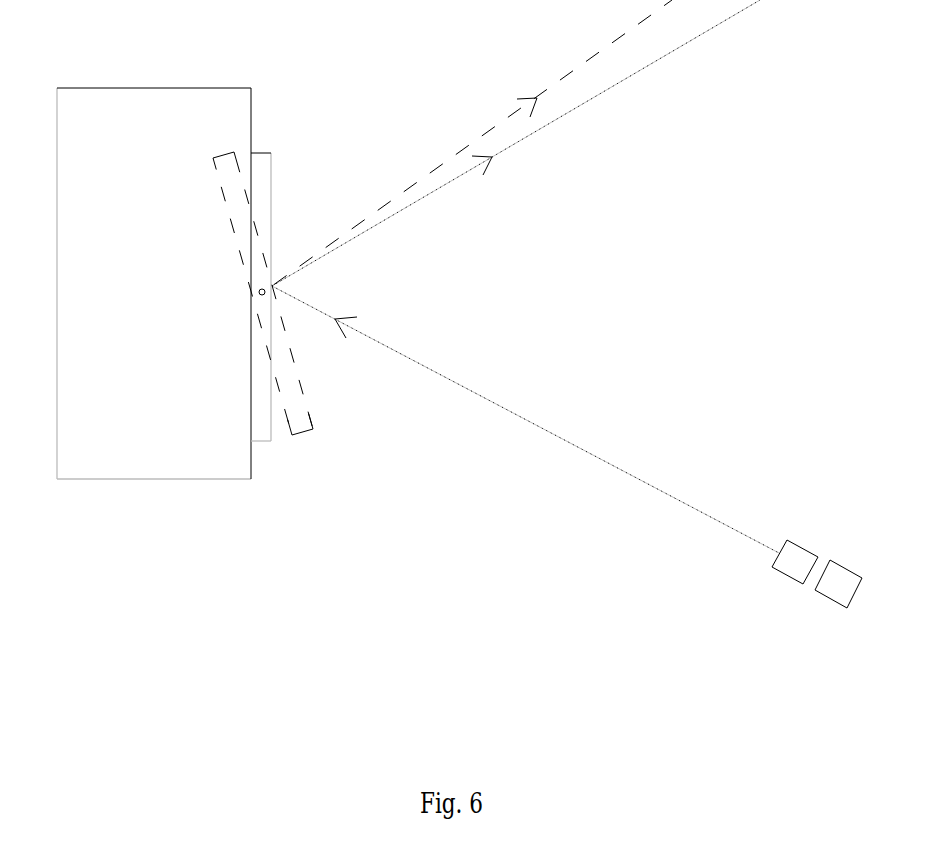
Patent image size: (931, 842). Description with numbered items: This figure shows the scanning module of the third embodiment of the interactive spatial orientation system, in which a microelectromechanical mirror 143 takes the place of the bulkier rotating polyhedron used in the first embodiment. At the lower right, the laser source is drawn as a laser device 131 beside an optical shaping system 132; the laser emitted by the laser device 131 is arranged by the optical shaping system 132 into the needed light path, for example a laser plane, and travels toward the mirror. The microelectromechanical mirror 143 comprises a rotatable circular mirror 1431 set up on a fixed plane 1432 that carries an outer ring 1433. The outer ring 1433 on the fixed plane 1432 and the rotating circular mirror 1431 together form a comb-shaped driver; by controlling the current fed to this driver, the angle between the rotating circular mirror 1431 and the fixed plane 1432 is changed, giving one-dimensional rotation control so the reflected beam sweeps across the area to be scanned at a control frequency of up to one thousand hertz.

The microelectromechanical mirror 143 is at (87, 432).
The rotatable circular mirror 1431 is at (262, 442).
The fixed plane 1432 is at (251, 114).
The outer ring 1433 is at (260, 153).
The optical shaping system 132 is at (795, 576).
The laser device 131 is at (837, 588).